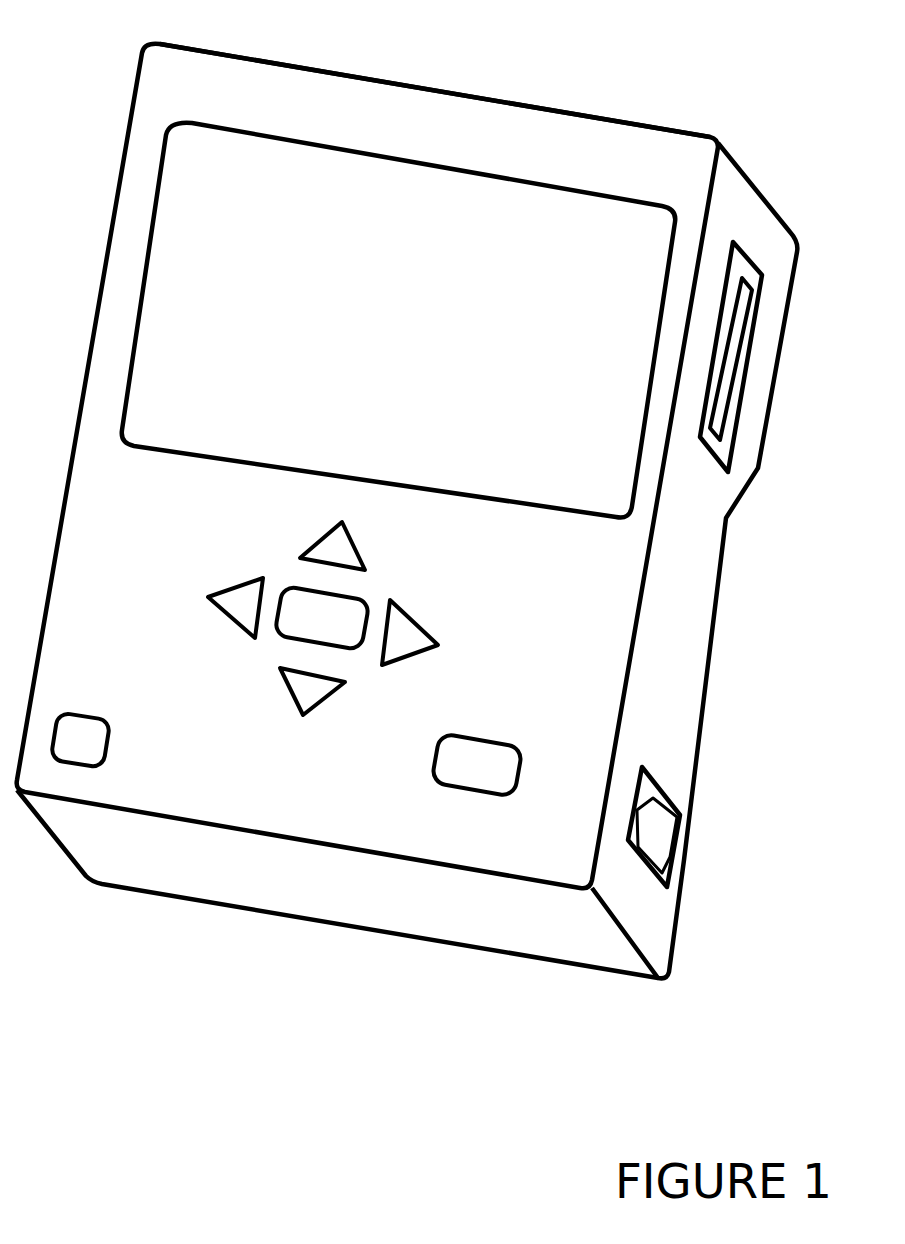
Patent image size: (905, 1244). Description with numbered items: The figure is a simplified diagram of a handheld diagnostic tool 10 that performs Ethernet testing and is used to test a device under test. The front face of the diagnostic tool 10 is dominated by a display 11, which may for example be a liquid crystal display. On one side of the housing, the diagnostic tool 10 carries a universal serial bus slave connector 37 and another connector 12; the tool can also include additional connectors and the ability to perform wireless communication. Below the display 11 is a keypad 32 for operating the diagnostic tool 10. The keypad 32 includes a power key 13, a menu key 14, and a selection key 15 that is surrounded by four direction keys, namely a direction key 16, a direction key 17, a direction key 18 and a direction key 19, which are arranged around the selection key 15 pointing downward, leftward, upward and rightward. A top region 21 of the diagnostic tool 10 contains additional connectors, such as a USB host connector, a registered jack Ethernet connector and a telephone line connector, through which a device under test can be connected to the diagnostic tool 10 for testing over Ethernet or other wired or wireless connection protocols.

The diagnostic tool 10 is at (540, 967).
The display 11 is at (565, 519).
The connector 12 is at (703, 446).
The power key 13 is at (76, 705).
The menu key 14 is at (503, 737).
The selection key 15 is at (365, 598).
The direction key 16 is at (305, 718).
The direction key 17 is at (228, 615).
The direction key 18 is at (362, 548).
The direction key 19 is at (385, 668).
The top region 21 is at (630, 103).
The keypad 32 is at (117, 599).
The universal serial bus (USB) slave connector 37 is at (663, 787).